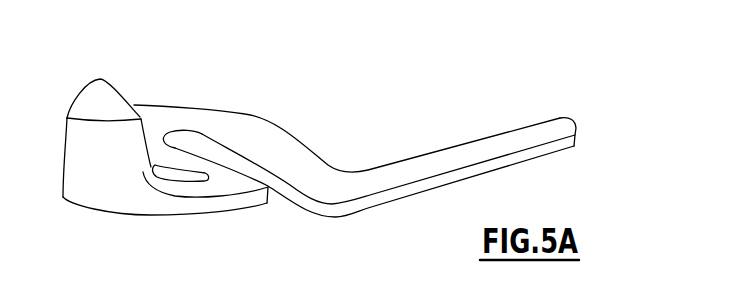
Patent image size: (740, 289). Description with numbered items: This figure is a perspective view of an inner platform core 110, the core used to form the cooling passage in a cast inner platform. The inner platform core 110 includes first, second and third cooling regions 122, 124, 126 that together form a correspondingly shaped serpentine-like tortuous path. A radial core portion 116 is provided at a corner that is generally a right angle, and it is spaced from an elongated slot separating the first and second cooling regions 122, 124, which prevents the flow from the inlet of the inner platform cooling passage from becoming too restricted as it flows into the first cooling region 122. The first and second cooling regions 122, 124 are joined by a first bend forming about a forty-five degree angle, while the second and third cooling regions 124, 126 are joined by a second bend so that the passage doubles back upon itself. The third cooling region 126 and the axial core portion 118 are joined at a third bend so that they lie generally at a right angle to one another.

The inner platform core 110 is at (383, 133).
The radial core portion 116 is at (101, 103).
The axial core portion 118 is at (537, 131).
The first cooling region 122 is at (211, 214).
The second cooling region 124 is at (185, 153).
The third cooling region 126 is at (281, 138).